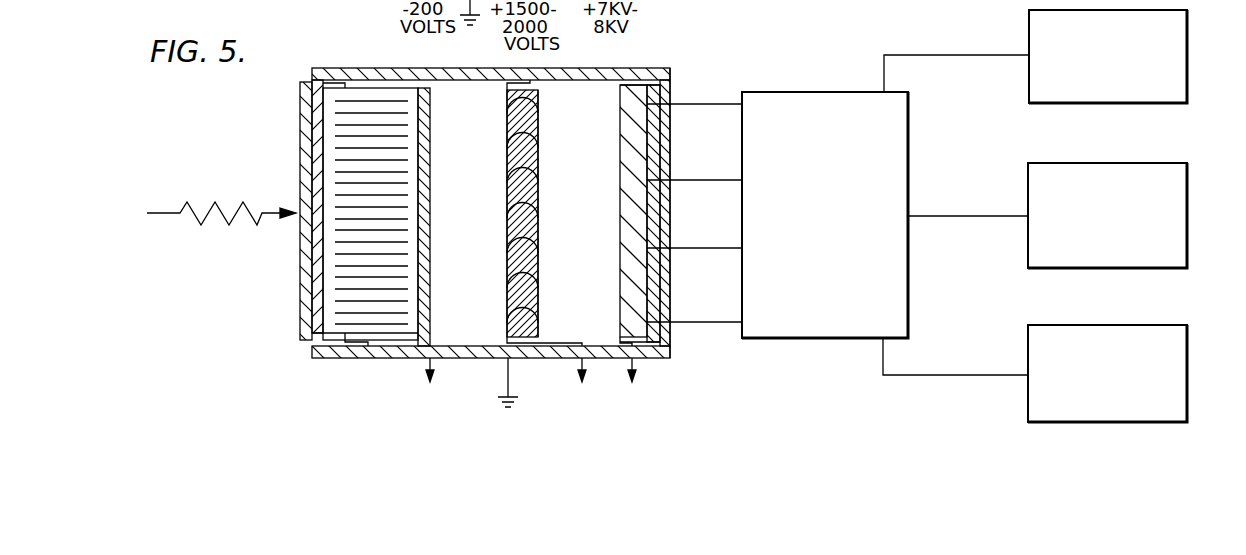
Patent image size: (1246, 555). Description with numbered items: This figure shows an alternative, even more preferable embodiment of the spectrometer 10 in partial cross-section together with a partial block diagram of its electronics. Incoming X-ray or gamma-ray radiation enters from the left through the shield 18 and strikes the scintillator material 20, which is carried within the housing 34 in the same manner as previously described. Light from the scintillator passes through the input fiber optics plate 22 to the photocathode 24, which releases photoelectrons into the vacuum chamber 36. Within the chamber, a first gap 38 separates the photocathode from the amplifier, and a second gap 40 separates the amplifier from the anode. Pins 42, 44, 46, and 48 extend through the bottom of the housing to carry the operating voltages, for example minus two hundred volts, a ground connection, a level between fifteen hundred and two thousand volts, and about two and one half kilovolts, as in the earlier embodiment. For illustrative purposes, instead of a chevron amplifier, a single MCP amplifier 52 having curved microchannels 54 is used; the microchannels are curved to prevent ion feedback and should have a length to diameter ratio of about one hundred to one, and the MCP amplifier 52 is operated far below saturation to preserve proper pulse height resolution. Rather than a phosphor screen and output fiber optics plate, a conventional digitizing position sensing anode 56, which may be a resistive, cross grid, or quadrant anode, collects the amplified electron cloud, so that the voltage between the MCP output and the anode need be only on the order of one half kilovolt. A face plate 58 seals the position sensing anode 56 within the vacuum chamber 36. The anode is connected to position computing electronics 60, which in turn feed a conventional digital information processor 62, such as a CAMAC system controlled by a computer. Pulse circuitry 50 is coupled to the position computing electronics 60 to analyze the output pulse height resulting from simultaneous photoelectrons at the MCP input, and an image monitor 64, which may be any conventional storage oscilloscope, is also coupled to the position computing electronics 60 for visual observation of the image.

The spectrometer 10 is at (938, 40).
The shield 18 is at (300, 108).
The scintillator material 20 is at (318, 130).
The input fiber optics plate 22 is at (387, 97).
The photocathode 24 is at (430, 147).
The housing 34 is at (346, 68).
The vacuum chamber 36 is at (473, 248).
The gap 38 is at (480, 293).
The gap 40 is at (592, 300).
The pin 42 is at (428, 358).
The pin 44 is at (508, 360).
The pin 46 is at (582, 360).
The pin 48 is at (640, 362).
The pulse circuitry 50 is at (1187, 345).
The MCP amplifier 52 is at (538, 170).
The curved microchannels 54 is at (507, 207).
The position sensing anode 56 is at (620, 107).
The face plate 58 is at (668, 125).
The position computing electronics 60 is at (830, 92).
The digital information processor 62 is at (1187, 210).
The image monitor 64 is at (1187, 65).